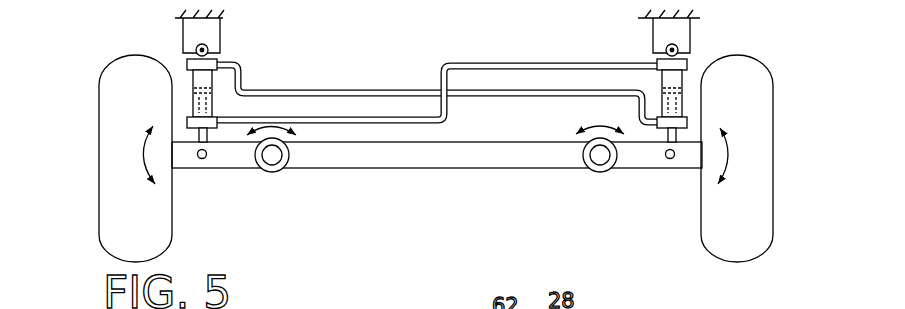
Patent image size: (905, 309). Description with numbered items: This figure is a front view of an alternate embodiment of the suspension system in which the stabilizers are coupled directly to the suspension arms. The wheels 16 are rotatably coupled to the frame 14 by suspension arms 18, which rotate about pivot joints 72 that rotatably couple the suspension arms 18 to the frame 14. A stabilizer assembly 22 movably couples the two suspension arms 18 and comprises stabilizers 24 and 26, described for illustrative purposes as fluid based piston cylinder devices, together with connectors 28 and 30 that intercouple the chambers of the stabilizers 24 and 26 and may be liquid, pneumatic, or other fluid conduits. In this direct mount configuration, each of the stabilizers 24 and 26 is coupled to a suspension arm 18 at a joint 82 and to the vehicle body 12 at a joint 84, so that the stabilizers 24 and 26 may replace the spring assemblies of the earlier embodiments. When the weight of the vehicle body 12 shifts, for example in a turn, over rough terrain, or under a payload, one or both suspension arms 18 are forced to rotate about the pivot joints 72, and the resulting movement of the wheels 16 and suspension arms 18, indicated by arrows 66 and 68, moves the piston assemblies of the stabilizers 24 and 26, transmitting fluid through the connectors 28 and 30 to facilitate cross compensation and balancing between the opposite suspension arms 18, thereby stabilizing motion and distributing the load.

The vehicle body 12 is at (223, 18).
The frame 14 is at (410, 168).
The wheels 16 is at (99, 157).
The suspension arms 18 is at (227, 168).
The stabilizer assembly 22 is at (390, 57).
The stabilizer 24 is at (226, 99).
The stabilizer 26 is at (645, 81).
The connector 28 is at (488, 62).
The connector 30 is at (470, 98).
The arrows 66 is at (147, 152).
The arrows 68 is at (610, 124).
The pivot joints 72 is at (286, 187).
The joints 82 is at (202, 159).
The joints 84 is at (208, 48).